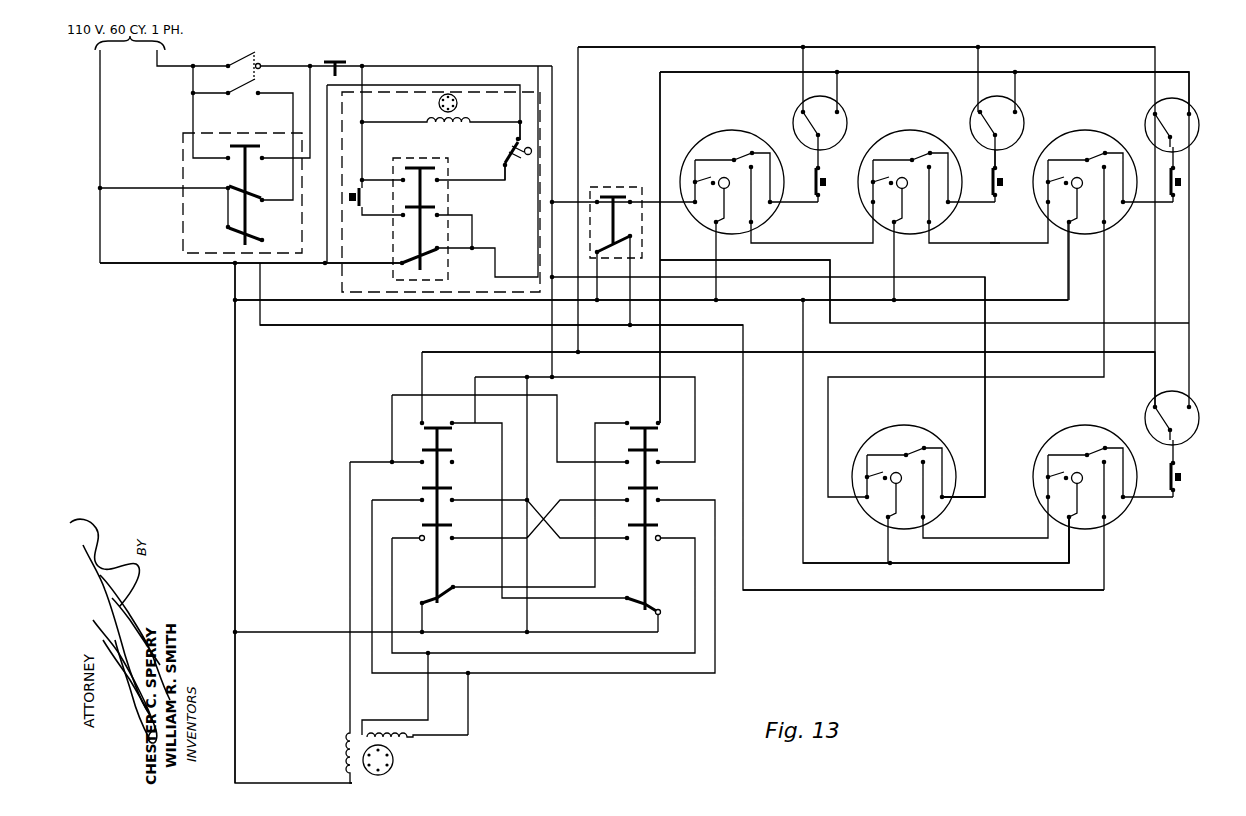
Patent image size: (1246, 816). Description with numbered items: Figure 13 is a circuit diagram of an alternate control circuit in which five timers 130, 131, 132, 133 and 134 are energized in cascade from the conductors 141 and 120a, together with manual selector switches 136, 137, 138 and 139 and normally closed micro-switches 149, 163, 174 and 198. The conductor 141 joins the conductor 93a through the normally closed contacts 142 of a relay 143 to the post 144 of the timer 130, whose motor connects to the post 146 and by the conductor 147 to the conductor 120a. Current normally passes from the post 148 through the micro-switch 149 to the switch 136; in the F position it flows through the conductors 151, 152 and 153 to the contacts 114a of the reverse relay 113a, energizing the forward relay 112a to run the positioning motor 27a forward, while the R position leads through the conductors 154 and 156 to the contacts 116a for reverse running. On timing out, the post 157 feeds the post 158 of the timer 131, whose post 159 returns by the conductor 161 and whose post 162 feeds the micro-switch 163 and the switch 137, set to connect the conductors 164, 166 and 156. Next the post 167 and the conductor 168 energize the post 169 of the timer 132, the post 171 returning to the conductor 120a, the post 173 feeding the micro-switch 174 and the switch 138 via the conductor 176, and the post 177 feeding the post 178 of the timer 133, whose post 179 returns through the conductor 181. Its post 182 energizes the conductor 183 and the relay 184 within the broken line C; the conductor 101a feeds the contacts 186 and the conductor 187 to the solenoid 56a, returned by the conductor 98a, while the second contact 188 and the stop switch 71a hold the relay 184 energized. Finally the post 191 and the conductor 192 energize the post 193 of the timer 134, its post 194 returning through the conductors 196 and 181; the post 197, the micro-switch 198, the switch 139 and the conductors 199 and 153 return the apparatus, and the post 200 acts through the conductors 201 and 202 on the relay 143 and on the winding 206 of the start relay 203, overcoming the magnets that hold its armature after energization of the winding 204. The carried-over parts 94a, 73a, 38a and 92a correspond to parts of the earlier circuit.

The positioning motor 27a is at (384, 778).
The main switch 94a is at (246, 56).
The pushbutton switch 73a is at (338, 63).
The start relay 203 is at (183, 224).
The winding 204 is at (228, 188).
The winding 206 is at (228, 229).
The broken line C is at (390, 84).
The conductor 93a is at (471, 90).
The conductor 101a is at (358, 140).
The coil and motor 38a is at (430, 120).
The stop switch 71a is at (364, 210).
The contacts 186 is at (427, 166).
The relay 184 is at (425, 158).
The second contact 188 is at (438, 207).
The solenoid 56a is at (505, 161).
The conductor 187 is at (468, 181).
The conductor 98a is at (272, 265).
The conductor 120a is at (300, 302).
The conductor 202 is at (282, 327).
The conductor 153 is at (440, 352).
The conductor 92a is at (233, 418).
The contacts 114a is at (422, 423).
The reverse relay 113a is at (452, 597).
The contacts 116a is at (645, 423).
The forward relay 112a is at (627, 605).
The relay 143 is at (593, 186).
The normally closed contacts 142 is at (613, 195).
The conductor 141 is at (554, 200).
The conductor 152 is at (770, 45).
The conductor 151 is at (802, 62).
The conductor 156 is at (686, 72).
The conductor 154 is at (841, 76).
The conductor 166 is at (1018, 82).
The conductor 176 is at (1153, 62).
The selector switch 136 is at (800, 113).
The switch 137 is at (970, 120).
The switch 138 is at (1144, 120).
The switch 139 is at (1150, 408).
The micro-switch 149 is at (824, 194).
The micro-switch 163 is at (1002, 194).
The micro-switch 174 is at (1183, 190).
The micro-switch 198 is at (1183, 476).
The timer 130 is at (731, 130).
The binding post 144 is at (693, 205).
The post 146 is at (714, 225).
The connecting post 148 is at (771, 204).
The connecting post 157 is at (753, 225).
The conductor 147 is at (722, 299).
The post 159 is at (878, 252).
The timer 131 is at (909, 131).
The binding post 158 is at (870, 205).
The conductor 161 is at (895, 262).
The connecting post 162 is at (949, 204).
The conductor 164 is at (993, 157).
The connecting post 167 is at (931, 225).
The conductor 168 is at (1018, 246).
The connecting post 169 is at (1046, 206).
The timer 132 is at (1090, 131).
The connecting post 171 is at (1068, 225).
The connecting post 173 is at (1125, 204).
The post 177 is at (1106, 225).
The conductor 199 is at (1005, 353).
The conductor 183 is at (986, 388).
The timer 133 is at (919, 424).
The connecting post 178 is at (865, 499).
The post 179 is at (887, 520).
The connecting post 182 is at (950, 499).
The post 191 is at (928, 520).
The conductor 192 is at (950, 541).
The conductor 181 is at (812, 566).
The timer 134 is at (1052, 431).
The post 193 is at (1047, 499).
The post 194 is at (1068, 521).
The connecting post 197 is at (1128, 502).
The post 200 is at (1108, 521).
The conductor 196 is at (1075, 545).
The conductor 201 is at (1010, 591).